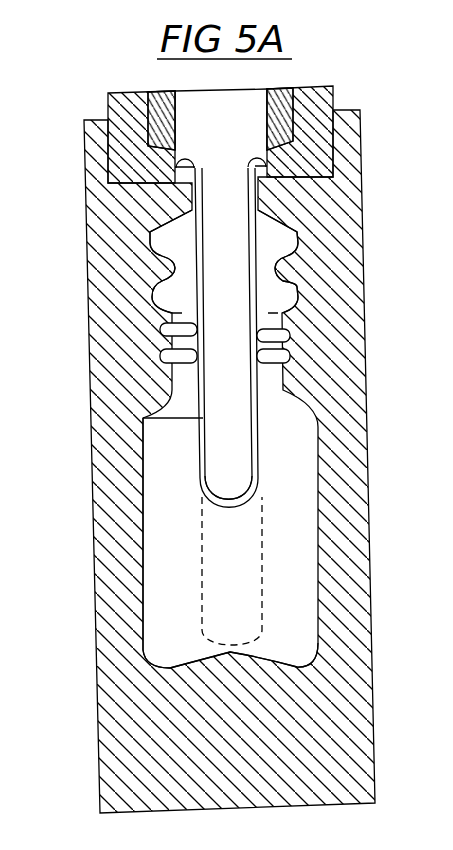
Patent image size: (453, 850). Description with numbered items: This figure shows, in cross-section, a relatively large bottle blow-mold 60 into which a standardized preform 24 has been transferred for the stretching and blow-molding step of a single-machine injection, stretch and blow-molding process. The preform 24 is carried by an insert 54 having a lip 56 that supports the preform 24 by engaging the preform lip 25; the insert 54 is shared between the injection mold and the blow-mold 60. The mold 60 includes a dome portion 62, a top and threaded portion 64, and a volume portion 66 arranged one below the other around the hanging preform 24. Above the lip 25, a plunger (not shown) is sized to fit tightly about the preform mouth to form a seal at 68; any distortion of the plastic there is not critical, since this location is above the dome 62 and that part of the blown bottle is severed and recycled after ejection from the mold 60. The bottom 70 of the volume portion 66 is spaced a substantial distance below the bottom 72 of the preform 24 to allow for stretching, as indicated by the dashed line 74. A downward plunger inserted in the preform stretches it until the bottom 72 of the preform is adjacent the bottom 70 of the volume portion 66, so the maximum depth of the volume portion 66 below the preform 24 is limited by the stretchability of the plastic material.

The insert 54 is at (185, 122).
The seal 68 is at (108, 157).
The lip 56 is at (188, 172).
The preform lip 25 is at (258, 174).
The dome portion 62 is at (297, 234).
The blow-mold 60 is at (355, 378).
The top and threaded portion 64 is at (170, 338).
The preform 24 is at (143, 418).
The volume portion 66 is at (143, 497).
The bottom of the preform 72 is at (250, 506).
The dashed line 74 is at (262, 562).
The bottom of the volume portion 70 is at (230, 652).